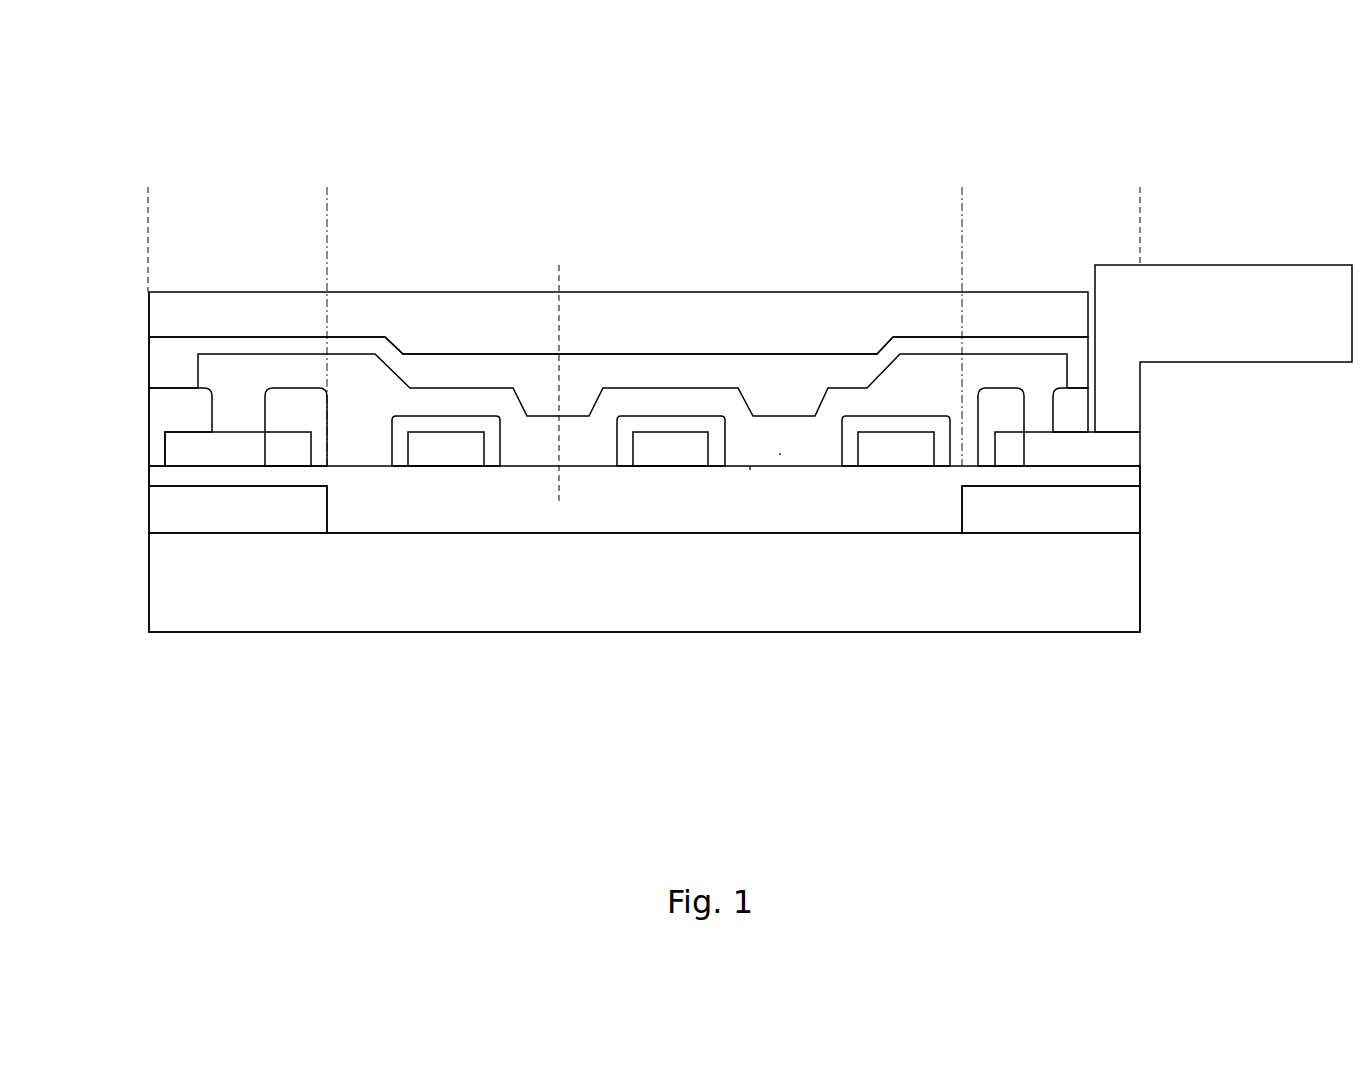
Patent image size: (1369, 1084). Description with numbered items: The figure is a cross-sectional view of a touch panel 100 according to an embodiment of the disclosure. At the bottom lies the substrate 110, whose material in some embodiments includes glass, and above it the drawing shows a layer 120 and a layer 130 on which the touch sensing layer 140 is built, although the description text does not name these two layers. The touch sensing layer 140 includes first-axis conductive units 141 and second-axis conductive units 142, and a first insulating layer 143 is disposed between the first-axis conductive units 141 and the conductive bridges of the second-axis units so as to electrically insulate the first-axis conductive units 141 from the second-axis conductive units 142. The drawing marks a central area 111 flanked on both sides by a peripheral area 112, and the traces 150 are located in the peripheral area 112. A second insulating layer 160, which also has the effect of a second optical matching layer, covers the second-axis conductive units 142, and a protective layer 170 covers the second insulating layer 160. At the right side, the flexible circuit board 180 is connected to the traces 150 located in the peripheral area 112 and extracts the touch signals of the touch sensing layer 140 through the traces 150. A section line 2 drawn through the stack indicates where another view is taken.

The touch panel 100 is at (93, 101).
The substrate 110 is at (148, 585).
The display region 111 is at (328, 187).
The peripheral area 112 is at (328, 187).
The buffer layer 120 is at (148, 517).
The insulating layer 130 is at (622, 525).
The touch sensing layer 140 is at (750, 464).
The first-axis conductive units 141 is at (457, 453).
The second-axis conductive units 142 is at (780, 453).
The first insulating layer 143 is at (148, 412).
The traces 150 is at (165, 448).
The second insulating layer 160 is at (148, 365).
The protective layer 170 is at (148, 320).
The flexible circuit board 180 is at (1227, 273).
The section line 2 is at (560, 265).